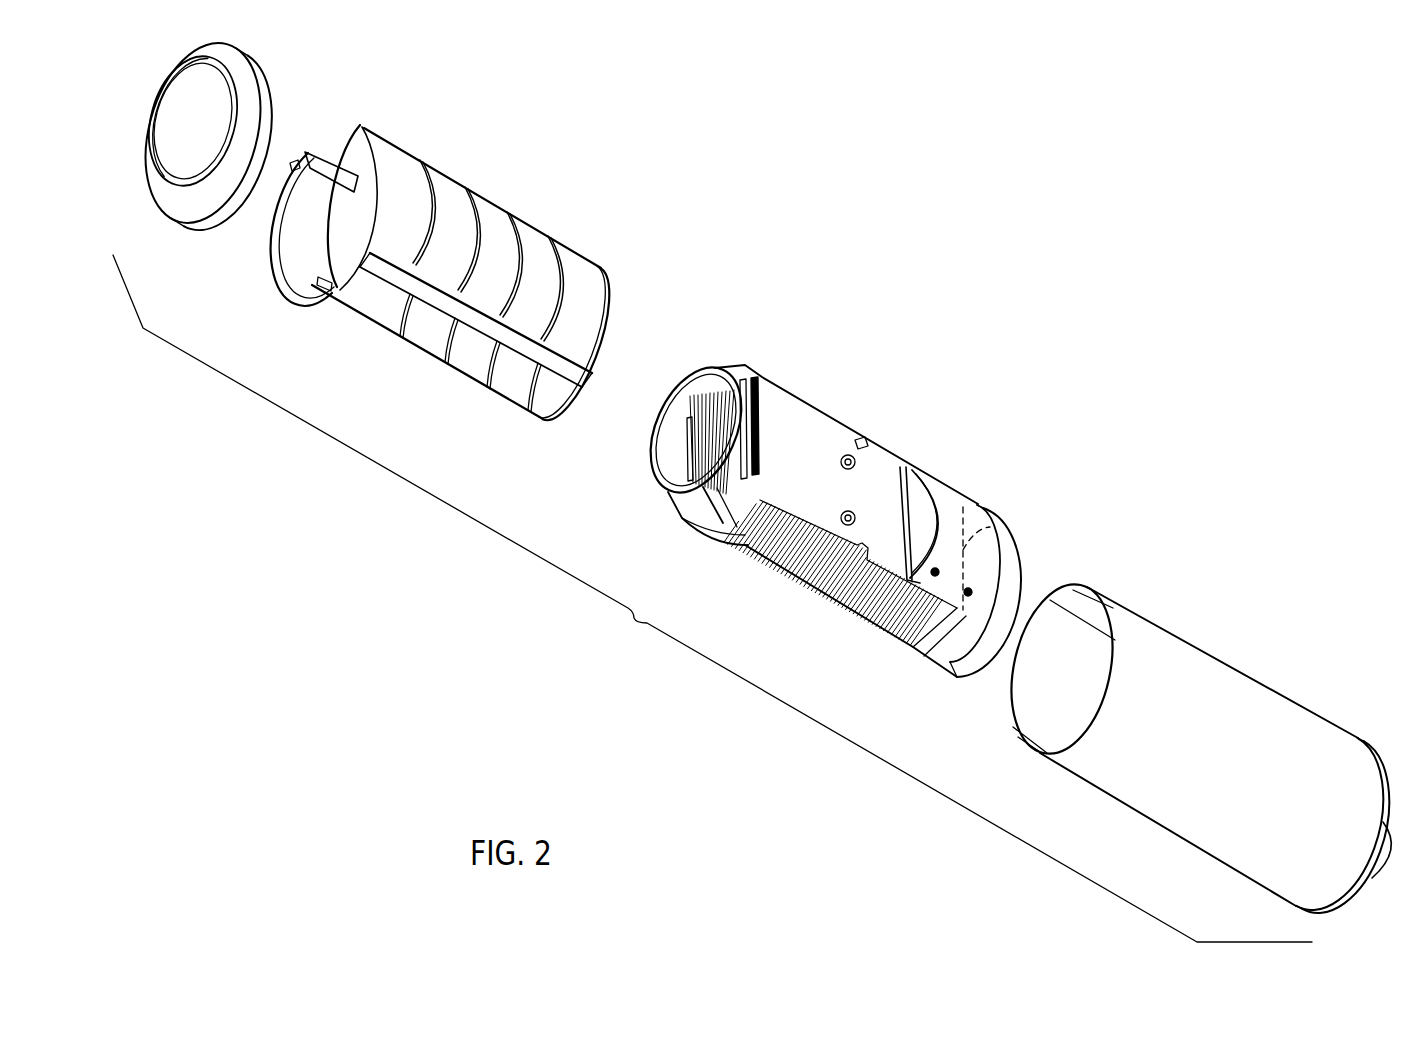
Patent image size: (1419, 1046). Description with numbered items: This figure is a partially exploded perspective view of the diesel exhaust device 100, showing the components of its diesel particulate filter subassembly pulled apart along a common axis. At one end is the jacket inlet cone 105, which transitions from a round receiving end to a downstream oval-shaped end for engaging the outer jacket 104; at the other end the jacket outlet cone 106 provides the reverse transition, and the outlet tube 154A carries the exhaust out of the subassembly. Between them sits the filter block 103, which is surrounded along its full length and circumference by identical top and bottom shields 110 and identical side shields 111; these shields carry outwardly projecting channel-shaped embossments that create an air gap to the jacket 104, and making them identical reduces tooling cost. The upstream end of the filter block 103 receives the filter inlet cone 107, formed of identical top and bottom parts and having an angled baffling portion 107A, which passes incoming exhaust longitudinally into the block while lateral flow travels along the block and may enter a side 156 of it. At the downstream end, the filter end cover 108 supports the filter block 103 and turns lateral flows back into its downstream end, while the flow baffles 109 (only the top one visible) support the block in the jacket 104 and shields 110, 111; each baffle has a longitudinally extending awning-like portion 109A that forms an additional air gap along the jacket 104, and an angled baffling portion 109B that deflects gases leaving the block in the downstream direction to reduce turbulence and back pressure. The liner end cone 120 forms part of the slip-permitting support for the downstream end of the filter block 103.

The diesel exhaust device 100 is at (712, 598).
The filter block 103 is at (872, 612).
The outer jacket 104 is at (1162, 818).
The jacket inlet cone 105 is at (186, 218).
The jacket outlet cone 106 is at (1388, 773).
The filter inlet cone 107 is at (688, 525).
The angled baffling portion 107A is at (690, 510).
The filter end cover 108 is at (985, 538).
The flow baffle 109 is at (917, 468).
The awning-like portion 109A is at (952, 507).
The angled baffling portion 109B is at (925, 514).
The top and bottom shield 110 is at (421, 183).
The side shield 111 is at (338, 150).
The liner end cone 120 is at (982, 673).
The outlet tube 154A is at (1377, 872).
The side of the filter block 156 is at (785, 552).